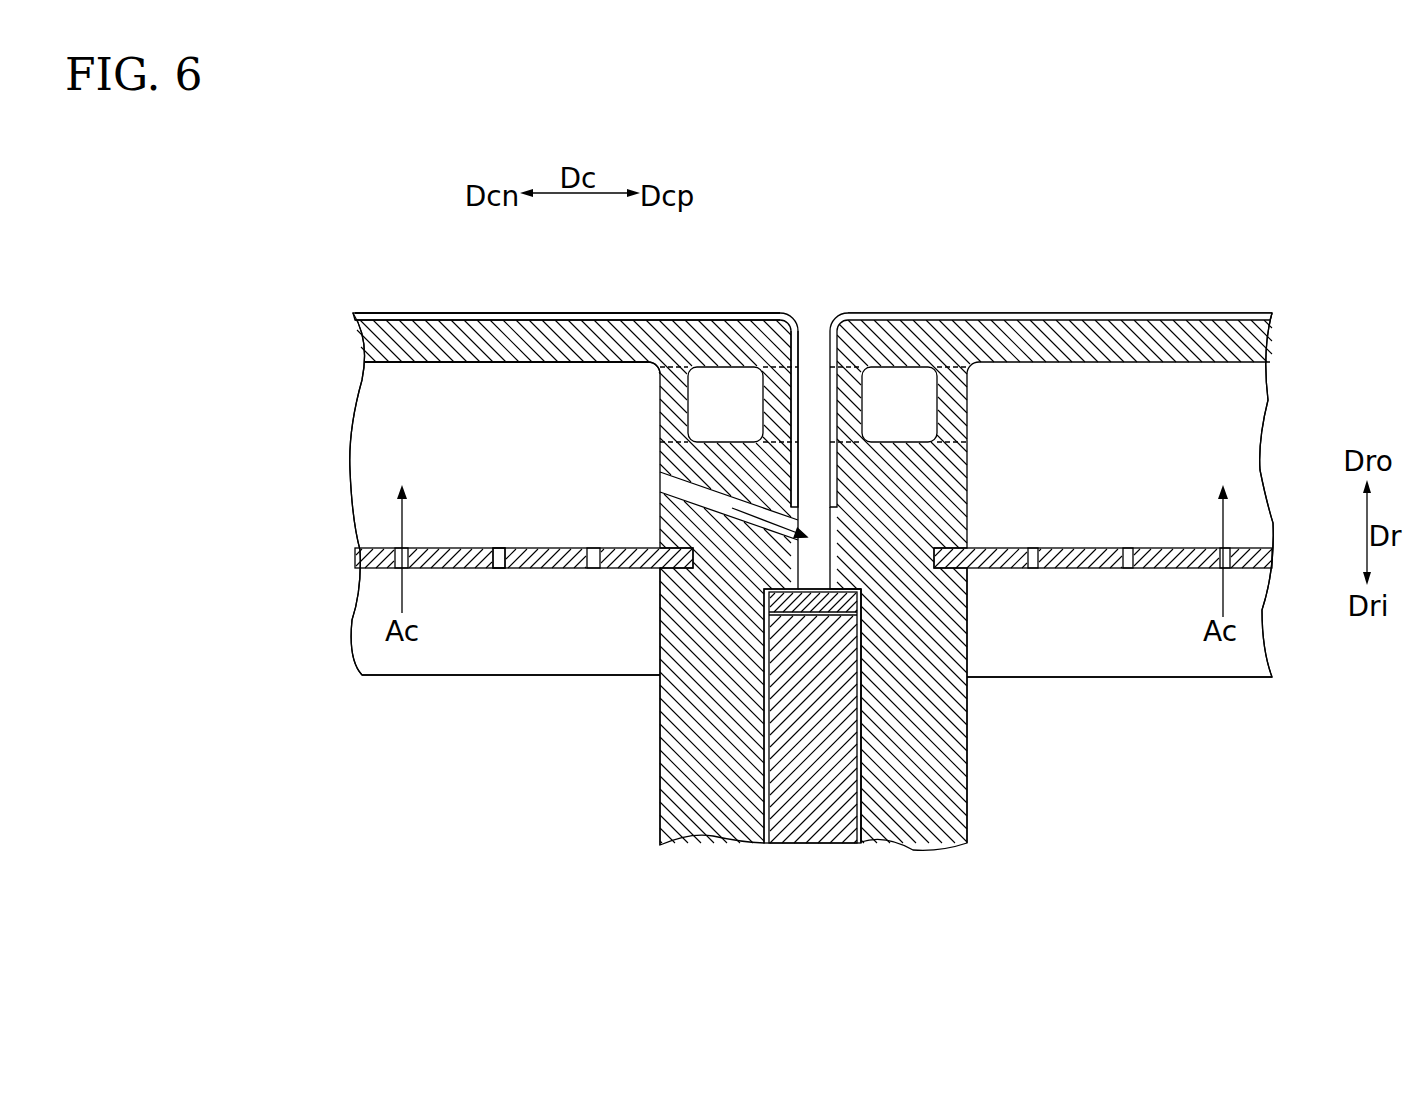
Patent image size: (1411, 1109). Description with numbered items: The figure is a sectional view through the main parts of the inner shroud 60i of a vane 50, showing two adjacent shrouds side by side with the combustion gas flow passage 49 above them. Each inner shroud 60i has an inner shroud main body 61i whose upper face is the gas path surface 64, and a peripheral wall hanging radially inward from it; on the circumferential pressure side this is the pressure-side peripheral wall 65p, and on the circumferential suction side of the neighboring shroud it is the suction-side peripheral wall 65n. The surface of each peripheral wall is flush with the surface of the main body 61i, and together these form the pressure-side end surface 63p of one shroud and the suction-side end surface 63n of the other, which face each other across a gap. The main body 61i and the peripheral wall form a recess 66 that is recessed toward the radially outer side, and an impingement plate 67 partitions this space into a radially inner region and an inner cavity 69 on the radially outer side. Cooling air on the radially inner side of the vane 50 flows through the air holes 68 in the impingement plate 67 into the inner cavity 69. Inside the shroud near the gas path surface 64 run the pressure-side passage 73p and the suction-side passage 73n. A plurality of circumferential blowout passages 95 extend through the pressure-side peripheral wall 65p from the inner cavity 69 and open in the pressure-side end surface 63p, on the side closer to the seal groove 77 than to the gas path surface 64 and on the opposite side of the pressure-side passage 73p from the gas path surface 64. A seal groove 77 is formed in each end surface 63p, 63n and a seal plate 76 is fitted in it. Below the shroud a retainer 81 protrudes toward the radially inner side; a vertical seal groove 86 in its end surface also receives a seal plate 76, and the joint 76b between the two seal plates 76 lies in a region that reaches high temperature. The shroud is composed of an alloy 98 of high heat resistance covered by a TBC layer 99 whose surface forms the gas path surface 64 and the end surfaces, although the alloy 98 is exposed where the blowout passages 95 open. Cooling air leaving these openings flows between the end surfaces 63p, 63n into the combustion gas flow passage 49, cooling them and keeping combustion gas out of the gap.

The combustion gas flow passage 49 is at (808, 193).
The vane 50 is at (345, 650).
The inner shroud 60i is at (350, 305).
The inner shroud main body 61i is at (372, 340).
The pressure-side end surface 63p is at (806, 390).
The suction-side end surface 63n is at (823, 390).
The gas path surface 64 is at (468, 313).
The pressure-side peripheral wall 65p is at (680, 620).
The suction-side peripheral wall 65n is at (948, 622).
The recess 66 is at (407, 363).
The impingement plate 67 is at (372, 556).
The air hole 68 is at (503, 568).
The inner cavity 69 is at (400, 447).
The pressure-side passage 73p is at (720, 390).
The suction-side passage 73n is at (900, 393).
The seal plate 76 is at (820, 787).
The joint 76b is at (840, 598).
The seal groove 77 is at (782, 600).
The retainer 81 is at (717, 802).
The vertical seal groove 86 is at (770, 787).
The circumferential blowout passage 95 is at (660, 483).
The alloy 98 is at (555, 328).
The TBC layer 99 is at (620, 317).